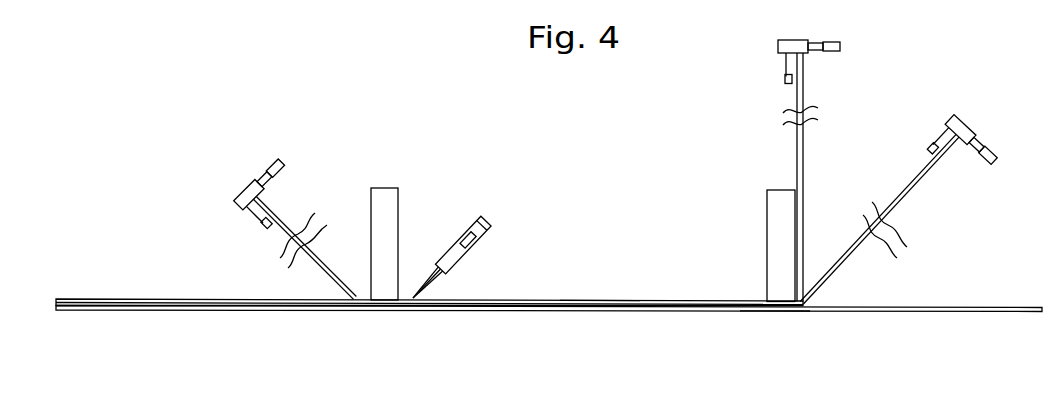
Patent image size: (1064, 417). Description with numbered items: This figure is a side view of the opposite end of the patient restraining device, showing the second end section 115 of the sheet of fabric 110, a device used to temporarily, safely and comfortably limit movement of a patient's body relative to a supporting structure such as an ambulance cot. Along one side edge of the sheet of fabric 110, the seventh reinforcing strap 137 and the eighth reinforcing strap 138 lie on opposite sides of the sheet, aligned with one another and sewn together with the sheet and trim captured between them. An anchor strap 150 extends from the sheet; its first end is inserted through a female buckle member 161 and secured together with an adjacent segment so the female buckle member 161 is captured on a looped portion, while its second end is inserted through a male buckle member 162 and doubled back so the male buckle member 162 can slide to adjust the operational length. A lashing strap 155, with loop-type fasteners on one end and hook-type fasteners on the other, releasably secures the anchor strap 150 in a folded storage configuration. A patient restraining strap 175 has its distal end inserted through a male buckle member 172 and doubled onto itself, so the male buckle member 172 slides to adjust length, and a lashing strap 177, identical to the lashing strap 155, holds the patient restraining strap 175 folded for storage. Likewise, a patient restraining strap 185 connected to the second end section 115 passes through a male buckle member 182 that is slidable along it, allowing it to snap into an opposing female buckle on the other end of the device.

The sheet of fabric 110 is at (995, 311).
The second end section 115 is at (597, 301).
The seventh reinforcing strap 137 is at (775, 313).
The eighth reinforcing strap 138 is at (94, 299).
The anchor strap 150 is at (329, 273).
The lashing strap 155 is at (383, 196).
The female buckle member 161 is at (480, 220).
The male buckle member 162 is at (241, 190).
The male buckle member 172 is at (778, 47).
The patient restraining strap 175 is at (797, 157).
The lashing strap 177 is at (775, 222).
The male buckle member 182 is at (958, 113).
The patient restraining strap 185 is at (907, 197).